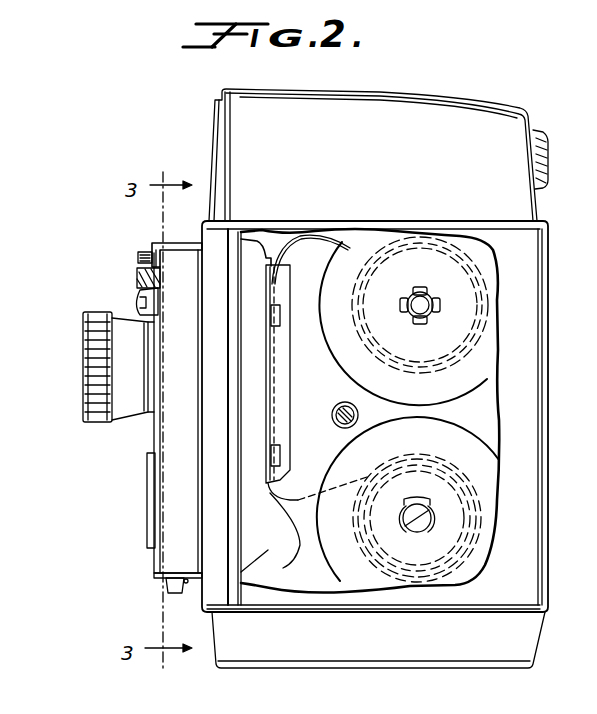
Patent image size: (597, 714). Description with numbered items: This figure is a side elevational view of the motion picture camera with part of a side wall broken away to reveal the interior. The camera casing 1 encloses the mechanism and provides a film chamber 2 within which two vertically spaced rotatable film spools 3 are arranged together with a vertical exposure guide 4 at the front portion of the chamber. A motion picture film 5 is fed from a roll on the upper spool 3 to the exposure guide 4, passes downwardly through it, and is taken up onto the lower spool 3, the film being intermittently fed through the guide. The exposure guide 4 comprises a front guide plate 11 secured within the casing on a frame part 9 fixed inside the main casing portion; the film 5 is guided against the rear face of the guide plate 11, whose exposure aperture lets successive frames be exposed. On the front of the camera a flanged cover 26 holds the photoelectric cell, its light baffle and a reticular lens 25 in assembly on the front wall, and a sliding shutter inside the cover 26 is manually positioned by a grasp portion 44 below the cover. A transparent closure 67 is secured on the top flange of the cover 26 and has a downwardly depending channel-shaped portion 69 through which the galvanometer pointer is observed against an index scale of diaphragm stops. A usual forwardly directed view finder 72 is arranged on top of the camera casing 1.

The casing 1 is at (528, 276).
The film chamber 2 is at (457, 413).
The film spools 3 is at (460, 392).
The exposure guide 4 is at (269, 389).
The motion picture film 5 is at (322, 243).
The frame part 9 is at (268, 550).
The front guide plate 11 is at (265, 345).
The reticular lens 25 is at (150, 506).
The flanged cover 26 is at (172, 553).
The grasp portion 44 is at (178, 598).
The closure 67 is at (153, 242).
The depending portion 69 is at (138, 257).
The view finder 72 is at (397, 110).